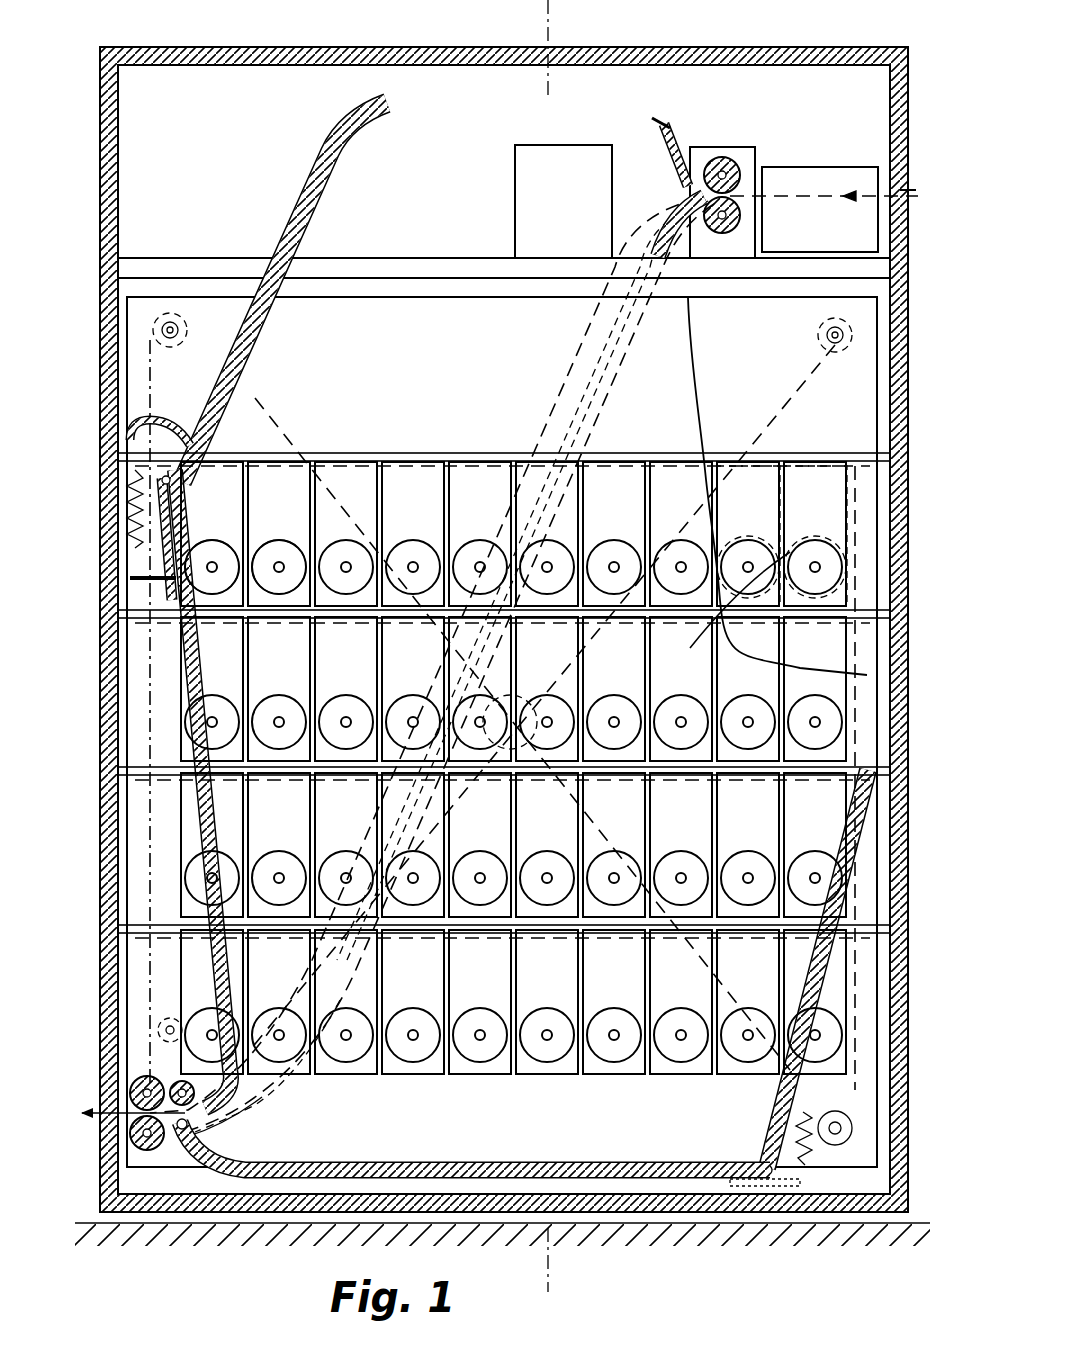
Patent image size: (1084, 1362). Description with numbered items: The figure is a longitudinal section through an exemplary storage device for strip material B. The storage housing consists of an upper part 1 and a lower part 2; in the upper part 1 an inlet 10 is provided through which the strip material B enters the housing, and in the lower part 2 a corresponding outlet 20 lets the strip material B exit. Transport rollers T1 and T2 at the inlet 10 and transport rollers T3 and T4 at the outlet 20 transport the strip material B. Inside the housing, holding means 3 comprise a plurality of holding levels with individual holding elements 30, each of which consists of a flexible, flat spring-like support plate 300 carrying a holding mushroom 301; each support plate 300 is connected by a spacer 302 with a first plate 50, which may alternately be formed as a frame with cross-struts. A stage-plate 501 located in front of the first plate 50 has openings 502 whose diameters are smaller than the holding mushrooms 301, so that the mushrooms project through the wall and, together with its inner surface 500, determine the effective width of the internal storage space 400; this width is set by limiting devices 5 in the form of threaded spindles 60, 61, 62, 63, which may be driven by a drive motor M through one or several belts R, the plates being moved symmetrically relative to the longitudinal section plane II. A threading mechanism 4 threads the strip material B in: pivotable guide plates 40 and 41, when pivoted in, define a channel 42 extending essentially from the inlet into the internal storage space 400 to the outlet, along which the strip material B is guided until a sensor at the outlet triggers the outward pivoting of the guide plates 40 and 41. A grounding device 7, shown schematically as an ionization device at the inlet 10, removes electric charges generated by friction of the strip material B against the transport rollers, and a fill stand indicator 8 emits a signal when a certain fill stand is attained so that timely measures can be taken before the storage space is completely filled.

The upper part 1 is at (205, 48).
The lower part 2 is at (130, 292).
The holding means 3 is at (425, 406).
The threading mechanism 4 is at (538, 424).
The limiting devices 5 is at (843, 44).
The grounding device 7 is at (678, 146).
The fill stand indicator 8 is at (515, 172).
The inlet 10 is at (906, 190).
The outlet 20 is at (124, 1146).
The holding elements 30 is at (389, 447).
The guide plate 40 is at (297, 212).
The guide plate 41 is at (586, 422).
The channel 42 is at (570, 365).
The first plate 50 is at (362, 345).
The threaded spindle 60 is at (845, 1125).
The threaded spindle 61 is at (829, 351).
The threaded spindle 62 is at (174, 344).
The threaded spindle 63 is at (172, 1016).
The support plate 300 is at (430, 509).
The holding mushroom 301 is at (228, 556).
The spacer 302 is at (130, 619).
The internal storage space 400 is at (483, 431).
The inner surface 500 is at (690, 380).
The stage-plate 501 is at (731, 387).
The openings 502 is at (796, 545).
The strip material B is at (810, 190).
The drive motor M is at (508, 696).
The belt R is at (262, 400).
The transport roller T1 is at (730, 158).
The transport roller T2 is at (748, 222).
The transport roller T3 is at (148, 1152).
The transport roller T4 is at (130, 1083).
The section line II is at (563, 18).